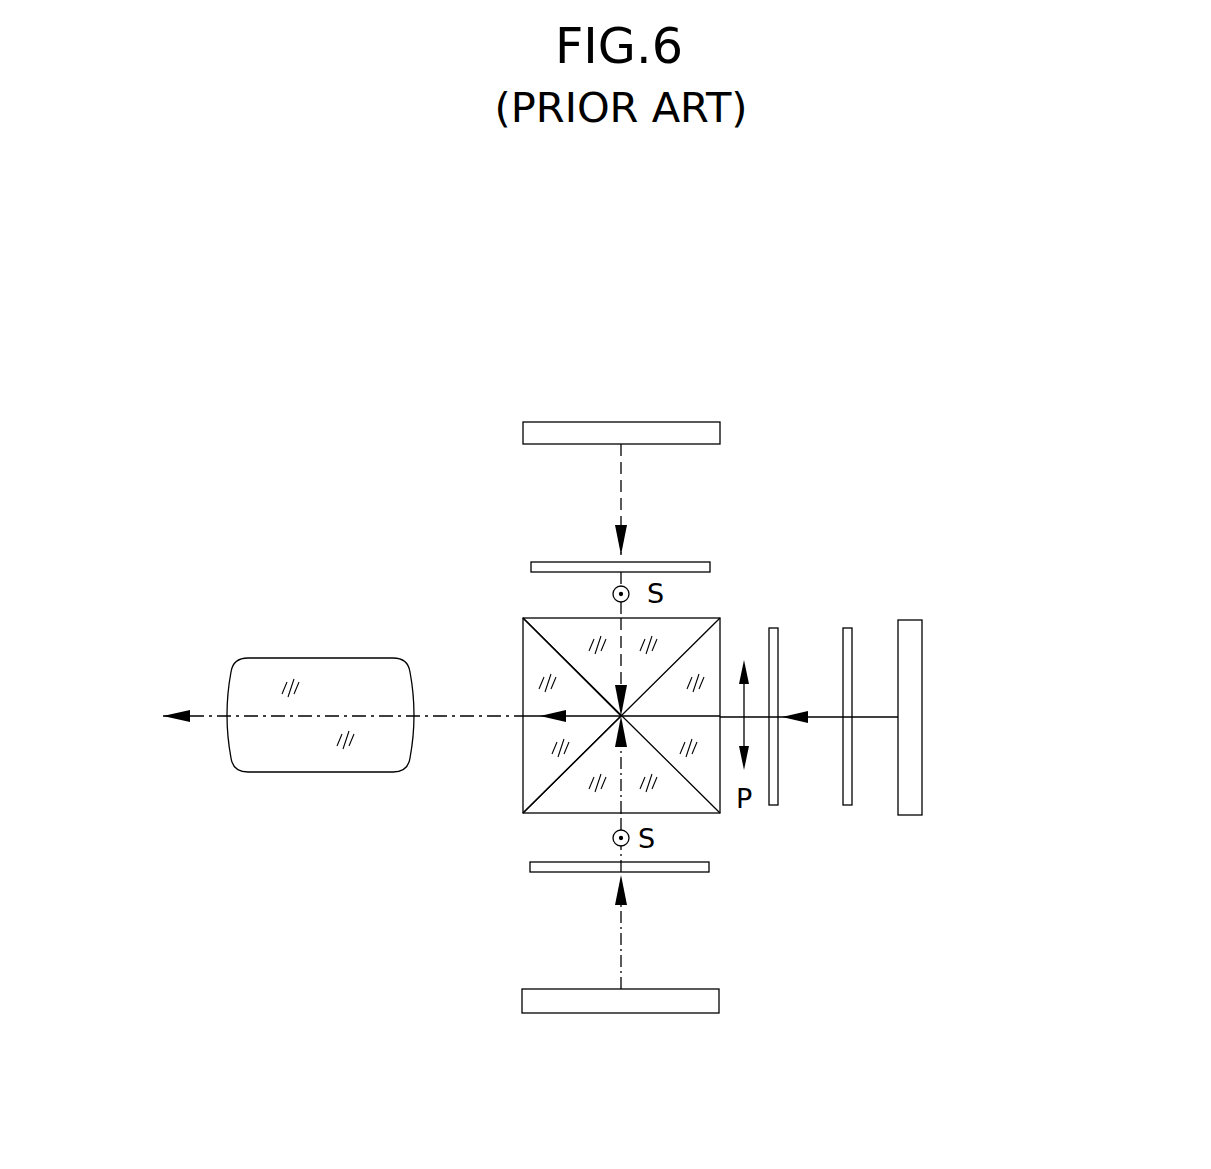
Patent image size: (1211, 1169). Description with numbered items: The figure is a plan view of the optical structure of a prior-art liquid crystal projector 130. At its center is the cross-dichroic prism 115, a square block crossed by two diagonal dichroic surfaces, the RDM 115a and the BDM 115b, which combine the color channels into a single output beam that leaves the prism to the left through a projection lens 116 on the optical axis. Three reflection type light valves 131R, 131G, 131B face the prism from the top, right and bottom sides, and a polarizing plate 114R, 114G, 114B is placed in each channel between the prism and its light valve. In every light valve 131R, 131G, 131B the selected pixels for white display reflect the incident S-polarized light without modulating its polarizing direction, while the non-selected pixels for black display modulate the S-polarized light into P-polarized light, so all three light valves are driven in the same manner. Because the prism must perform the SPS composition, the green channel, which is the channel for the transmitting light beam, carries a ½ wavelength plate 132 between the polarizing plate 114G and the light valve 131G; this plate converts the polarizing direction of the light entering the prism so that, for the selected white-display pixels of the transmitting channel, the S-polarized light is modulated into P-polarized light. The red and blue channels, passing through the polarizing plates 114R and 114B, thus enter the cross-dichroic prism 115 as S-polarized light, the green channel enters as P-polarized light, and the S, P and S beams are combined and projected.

The liquid crystal projector 130 is at (388, 380).
The reflection type light valve 131R is at (721, 432).
The reflection type light valve 131G is at (922, 672).
The reflection type light valve 131B is at (522, 1002).
The polarizing plate 114R is at (668, 561).
The polarizing plate 114G is at (780, 637).
The polarizing plate 114B is at (685, 873).
The cross-dichroic prism 115 is at (708, 600).
The RDM 115a is at (560, 772).
The BDM 115b is at (548, 648).
The projection lens 116 is at (318, 658).
The ½ wavelength plate 132 is at (848, 805).